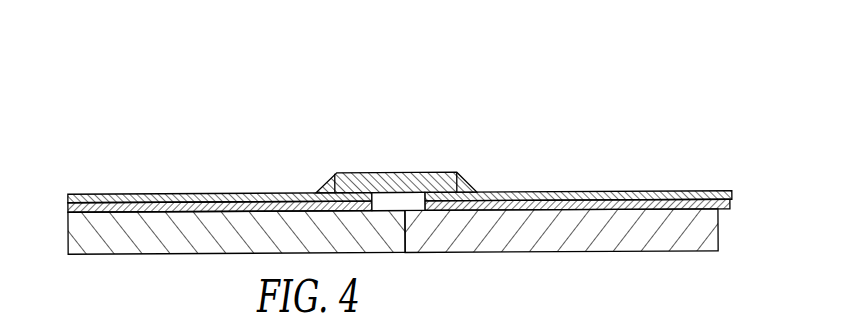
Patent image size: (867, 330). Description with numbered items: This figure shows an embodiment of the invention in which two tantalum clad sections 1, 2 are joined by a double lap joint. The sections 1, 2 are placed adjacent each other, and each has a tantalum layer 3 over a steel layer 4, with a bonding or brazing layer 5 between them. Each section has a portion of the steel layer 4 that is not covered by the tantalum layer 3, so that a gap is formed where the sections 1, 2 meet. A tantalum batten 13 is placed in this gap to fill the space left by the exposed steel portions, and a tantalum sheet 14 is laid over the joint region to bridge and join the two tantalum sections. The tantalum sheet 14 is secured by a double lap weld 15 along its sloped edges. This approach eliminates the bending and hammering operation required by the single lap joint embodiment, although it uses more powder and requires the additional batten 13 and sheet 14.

The section 1 is at (370, 194).
The section 2 is at (588, 163).
The tantalum layer 3 is at (392, 143).
The steel layer 4 is at (152, 246).
The bonding or brazing layer 5 is at (82, 210).
The tantalum batten 13 is at (414, 212).
The tantalum sheet 14 is at (414, 179).
The double lap weld 15 is at (325, 178).